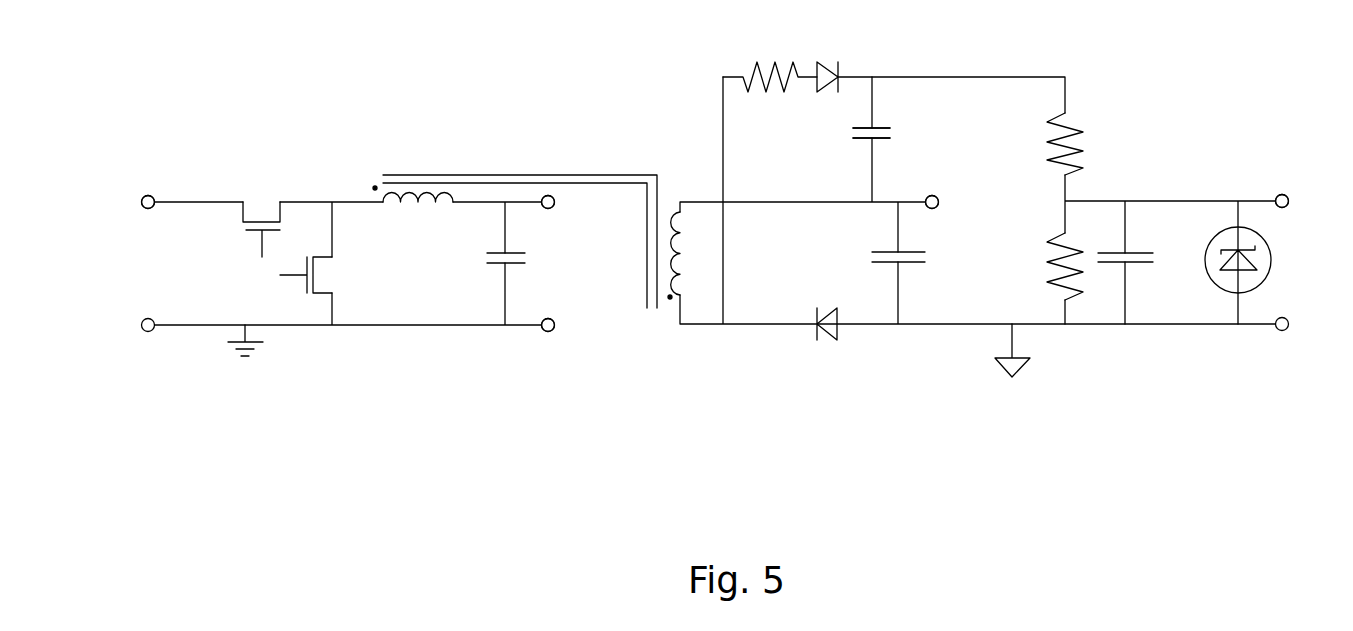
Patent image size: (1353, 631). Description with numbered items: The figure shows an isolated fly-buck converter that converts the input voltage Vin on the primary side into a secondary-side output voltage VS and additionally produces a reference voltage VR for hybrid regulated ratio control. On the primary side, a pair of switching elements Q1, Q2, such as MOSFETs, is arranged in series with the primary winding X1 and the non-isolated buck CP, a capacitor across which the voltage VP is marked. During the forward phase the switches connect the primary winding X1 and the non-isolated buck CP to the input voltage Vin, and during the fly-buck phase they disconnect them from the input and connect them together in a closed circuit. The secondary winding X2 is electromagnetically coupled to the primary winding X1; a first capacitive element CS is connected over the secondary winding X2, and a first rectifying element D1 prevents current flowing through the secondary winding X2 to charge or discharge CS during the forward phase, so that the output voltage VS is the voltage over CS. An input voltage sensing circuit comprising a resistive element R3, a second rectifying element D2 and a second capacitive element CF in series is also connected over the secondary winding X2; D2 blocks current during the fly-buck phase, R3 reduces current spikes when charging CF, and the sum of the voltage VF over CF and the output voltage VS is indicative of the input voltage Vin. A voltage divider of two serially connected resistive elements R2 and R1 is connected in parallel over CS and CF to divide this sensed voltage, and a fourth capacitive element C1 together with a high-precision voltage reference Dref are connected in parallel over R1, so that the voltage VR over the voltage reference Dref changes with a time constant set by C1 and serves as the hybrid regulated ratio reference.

The input voltage Vin is at (122, 199).
The switching element Q1 is at (266, 206).
The switching element Q2 is at (327, 277).
The primary winding X1 is at (413, 219).
The non-isolated buck CP is at (490, 276).
The primary voltage VP is at (559, 264).
The secondary winding X2 is at (693, 255).
The resistive element R3 is at (770, 55).
The second rectifying element D2 is at (839, 55).
The second capacitive element CF is at (849, 137).
The voltage over the second capacitive element VF is at (898, 126).
The first capacitive element CS is at (883, 277).
The output voltage VS is at (947, 244).
The first rectifying element D1 is at (827, 344).
The resistive element R2 is at (1041, 144).
The resistive element R1 is at (1042, 266).
The fourth capacitive element C1 is at (1147, 260).
The voltage reference Dref is at (1273, 260).
The voltage over the voltage reference VR is at (1310, 198).